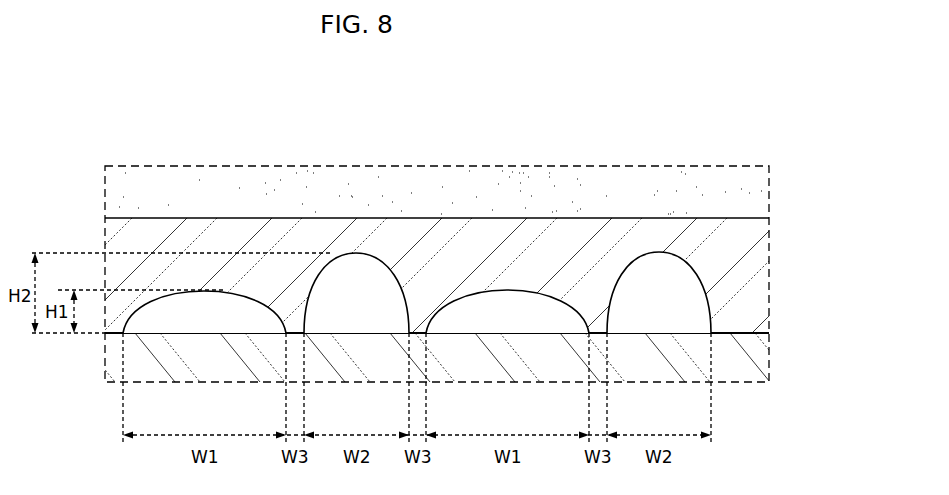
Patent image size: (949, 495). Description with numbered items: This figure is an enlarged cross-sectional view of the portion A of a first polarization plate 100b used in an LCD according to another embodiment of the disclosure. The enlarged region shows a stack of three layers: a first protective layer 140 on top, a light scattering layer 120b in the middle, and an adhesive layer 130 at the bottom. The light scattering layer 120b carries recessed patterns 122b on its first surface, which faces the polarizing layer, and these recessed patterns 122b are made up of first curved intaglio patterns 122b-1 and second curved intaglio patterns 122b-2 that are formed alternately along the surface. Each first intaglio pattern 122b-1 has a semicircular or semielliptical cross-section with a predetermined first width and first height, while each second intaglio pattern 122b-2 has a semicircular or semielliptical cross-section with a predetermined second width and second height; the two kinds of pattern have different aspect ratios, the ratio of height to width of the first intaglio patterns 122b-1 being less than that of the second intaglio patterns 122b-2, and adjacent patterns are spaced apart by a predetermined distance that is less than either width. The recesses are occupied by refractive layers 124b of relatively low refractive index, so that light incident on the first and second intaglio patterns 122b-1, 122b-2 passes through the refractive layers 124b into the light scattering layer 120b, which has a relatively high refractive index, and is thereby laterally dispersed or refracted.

The first polarization plate 100b is at (513, 133).
The portion A is at (613, 166).
The first protective layer 140 is at (763, 190).
The light scattering layer 120b is at (763, 254).
The recessed patterns 122b is at (357, 110).
The first curved intaglio patterns 122b-1 is at (207, 304).
The second curved intaglio patterns 122b-2 is at (572, 224).
The refractive layers 124b is at (689, 301).
The adhesive layer 130 is at (763, 359).